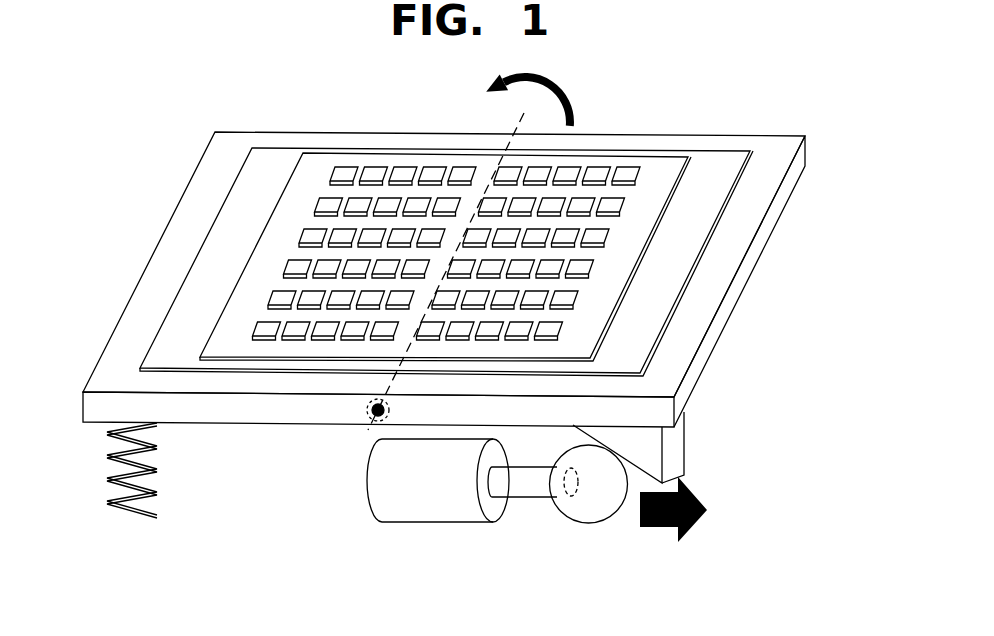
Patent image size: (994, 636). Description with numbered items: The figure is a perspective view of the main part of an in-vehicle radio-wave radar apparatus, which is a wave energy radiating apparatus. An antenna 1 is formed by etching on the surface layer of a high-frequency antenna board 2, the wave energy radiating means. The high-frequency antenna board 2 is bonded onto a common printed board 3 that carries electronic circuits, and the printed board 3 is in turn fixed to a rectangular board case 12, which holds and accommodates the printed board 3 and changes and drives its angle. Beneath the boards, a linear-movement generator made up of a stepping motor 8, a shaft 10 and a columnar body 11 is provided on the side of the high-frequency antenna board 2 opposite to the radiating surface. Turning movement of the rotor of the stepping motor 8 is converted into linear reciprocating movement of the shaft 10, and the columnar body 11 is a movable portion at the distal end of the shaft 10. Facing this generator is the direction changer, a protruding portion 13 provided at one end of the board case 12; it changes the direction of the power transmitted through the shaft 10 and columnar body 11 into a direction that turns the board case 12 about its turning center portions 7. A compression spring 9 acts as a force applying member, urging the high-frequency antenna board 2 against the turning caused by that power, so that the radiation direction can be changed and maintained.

The antenna 1 is at (348, 168).
The high-frequency antenna board 2 is at (293, 175).
The printed board 3 is at (710, 170).
The turning center portions 7 is at (373, 422).
The stepping motor 8 is at (398, 503).
The compression spring 9 is at (157, 460).
The shaft 10 is at (528, 488).
The columnar body 11 is at (590, 503).
The board case 12 is at (770, 152).
The protruding portion 13 is at (672, 437).